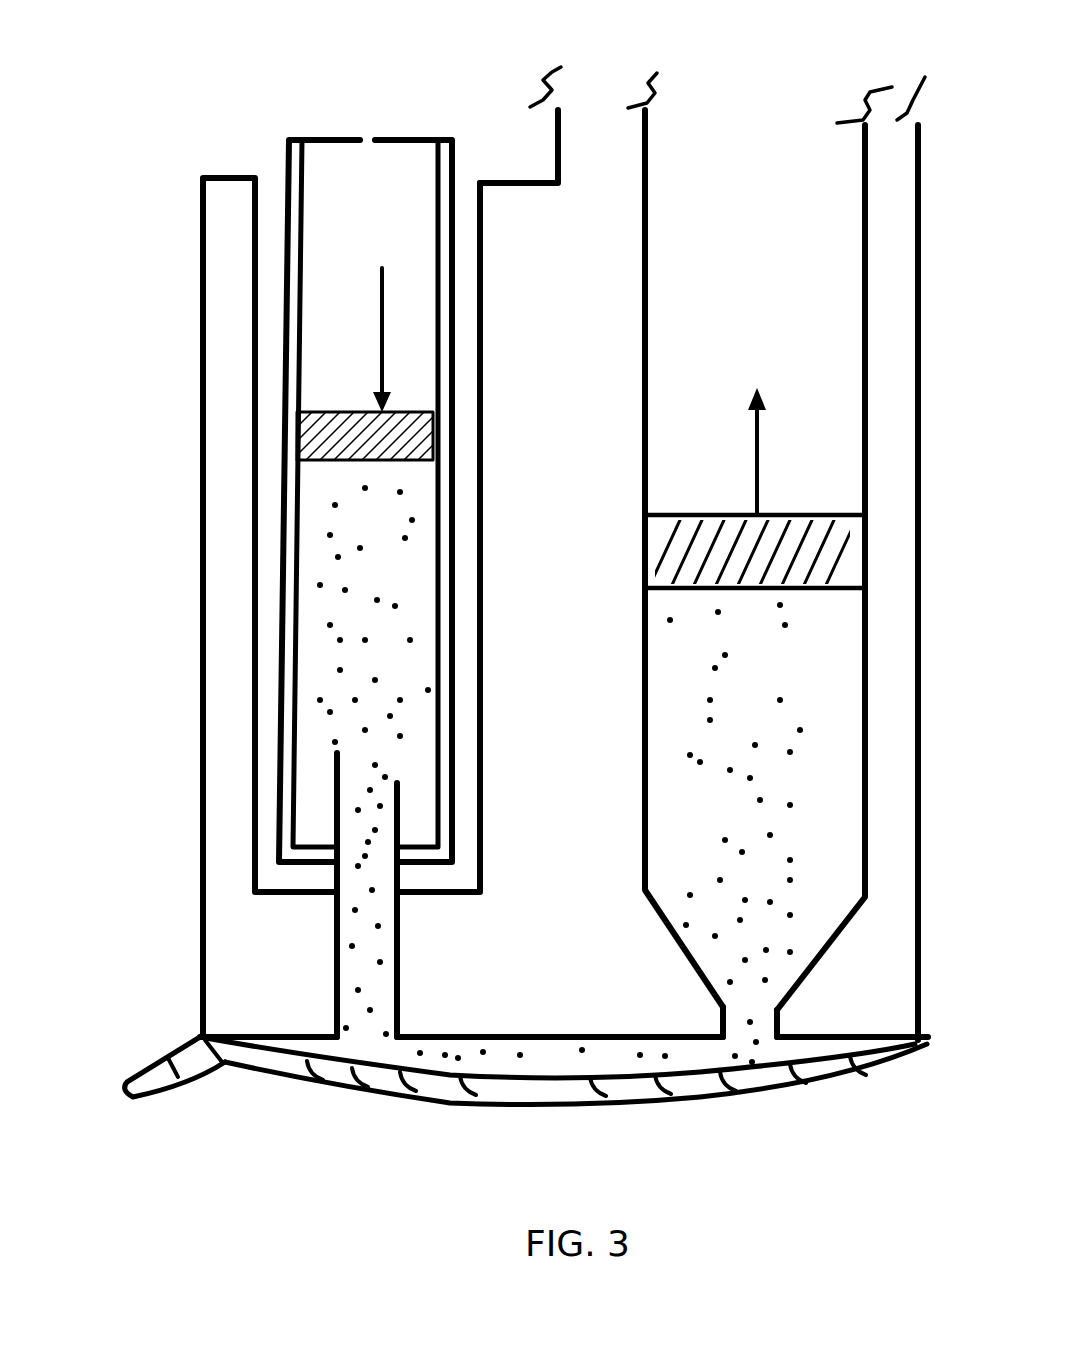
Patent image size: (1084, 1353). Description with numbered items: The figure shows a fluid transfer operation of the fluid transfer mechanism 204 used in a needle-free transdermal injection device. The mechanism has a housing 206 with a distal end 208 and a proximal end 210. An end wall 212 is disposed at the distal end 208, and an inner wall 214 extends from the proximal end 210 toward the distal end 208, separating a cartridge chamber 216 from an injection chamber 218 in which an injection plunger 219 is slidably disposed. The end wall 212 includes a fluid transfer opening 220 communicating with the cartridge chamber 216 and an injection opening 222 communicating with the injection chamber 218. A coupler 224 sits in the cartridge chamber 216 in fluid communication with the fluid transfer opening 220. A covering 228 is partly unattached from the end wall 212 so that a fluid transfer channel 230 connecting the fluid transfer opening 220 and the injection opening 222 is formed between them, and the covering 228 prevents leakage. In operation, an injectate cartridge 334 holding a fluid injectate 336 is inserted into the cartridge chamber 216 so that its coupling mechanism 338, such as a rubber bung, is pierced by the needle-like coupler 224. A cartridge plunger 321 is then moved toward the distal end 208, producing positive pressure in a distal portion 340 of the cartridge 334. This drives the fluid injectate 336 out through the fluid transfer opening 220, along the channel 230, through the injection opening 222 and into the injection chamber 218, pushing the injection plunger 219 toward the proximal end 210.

The fluid transfer mechanism 204 is at (182, 1157).
The housing 206 is at (200, 600).
The distal end 208 is at (200, 992).
The proximal end 210 is at (200, 196).
The end wall 212 is at (573, 1045).
The inner wall 214 is at (530, 252).
The cartridge chamber 216 is at (468, 512).
The injection chamber 218 is at (745, 360).
The injection plunger 219 is at (652, 556).
The fluid transfer opening 220 is at (410, 904).
The injection opening 222 is at (748, 1040).
The coupler 224 is at (333, 827).
The covering 228 is at (400, 1082).
The fluid transfer channel 230 is at (483, 1052).
The cartridge plunger 321 is at (334, 405).
The injectate cartridge 334 is at (285, 160).
The fluid injectate 336 is at (370, 647).
The coupling mechanism 338 is at (406, 850).
The distal portion 340 is at (370, 595).